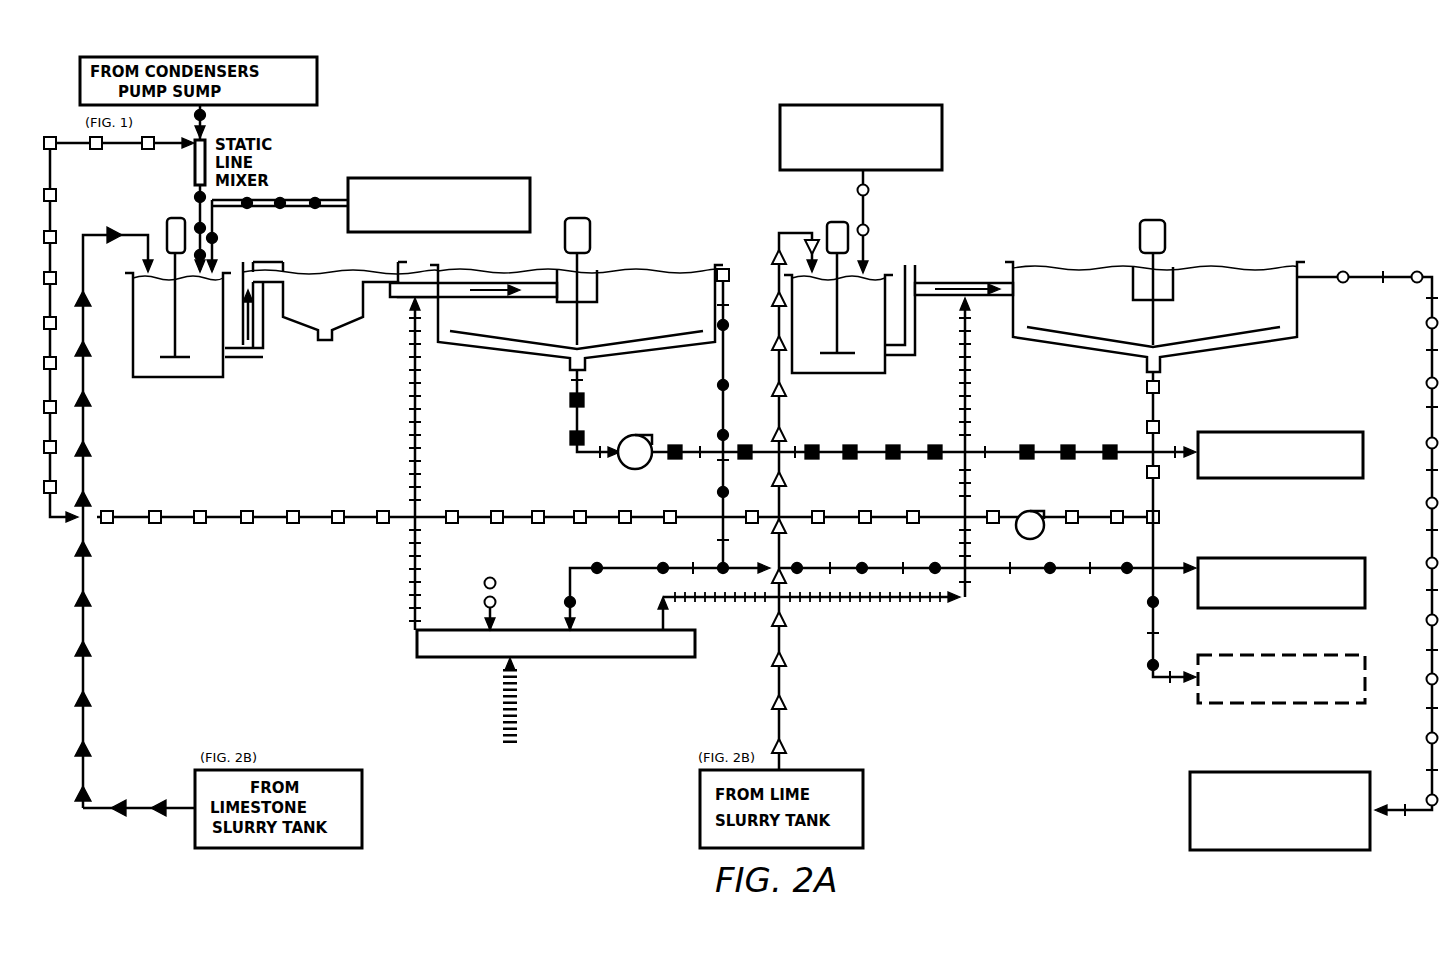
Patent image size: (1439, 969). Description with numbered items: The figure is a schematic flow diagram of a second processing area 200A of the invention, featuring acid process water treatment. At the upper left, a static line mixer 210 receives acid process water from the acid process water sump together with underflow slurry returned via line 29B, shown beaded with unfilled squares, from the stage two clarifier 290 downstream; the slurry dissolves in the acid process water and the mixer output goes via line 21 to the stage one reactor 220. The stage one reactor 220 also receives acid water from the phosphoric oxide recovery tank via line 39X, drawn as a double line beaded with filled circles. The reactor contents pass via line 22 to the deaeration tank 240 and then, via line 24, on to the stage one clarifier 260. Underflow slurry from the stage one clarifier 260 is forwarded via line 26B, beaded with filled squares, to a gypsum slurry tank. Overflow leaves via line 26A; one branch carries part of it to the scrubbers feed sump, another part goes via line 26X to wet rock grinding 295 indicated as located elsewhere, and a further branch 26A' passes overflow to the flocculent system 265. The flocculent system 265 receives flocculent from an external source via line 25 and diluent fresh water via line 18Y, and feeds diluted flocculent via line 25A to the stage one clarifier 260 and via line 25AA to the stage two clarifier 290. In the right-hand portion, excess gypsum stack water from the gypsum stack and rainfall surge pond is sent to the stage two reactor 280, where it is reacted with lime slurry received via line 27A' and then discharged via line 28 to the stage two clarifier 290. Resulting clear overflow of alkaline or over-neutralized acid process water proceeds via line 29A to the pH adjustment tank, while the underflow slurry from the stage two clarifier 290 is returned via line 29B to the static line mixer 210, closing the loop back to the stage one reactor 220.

The static line mixer 210 is at (195, 160).
The mixer output line 21 is at (196, 196).
The acid water line from P2O5 recovery tank 39X is at (222, 230).
The underflow slurry return line 29B is at (145, 148).
The lime slurry line 27A' is at (447, 506).
The stage 1 reactor 220 is at (133, 375).
The reactor discharge line 22 is at (265, 338).
The deaeration tank 240 is at (345, 330).
The clarifier feed line 24 is at (487, 283).
The stage 1 clarifier 260 is at (505, 345).
The first clarifier overflow line 26A is at (683, 418).
The underflow slurry line 26B is at (665, 448).
The second processing area 200A is at (668, 208).
The stage 2 reactor 280 is at (886, 378).
The stage 2 reactor discharge line 28 is at (948, 290).
The stage 2 clarifier 290 is at (1085, 345).
The clear overflow line 29A is at (1360, 274).
The diluted flocculent line to stage 1 clarifier 25A is at (413, 556).
The fresh water line 18Y is at (497, 590).
The flocculent system 265 is at (457, 630).
The flocculent line 25 is at (522, 690).
The overflow branch to flocculent system 26A' is at (668, 583).
The diluted flocculent line to stage 2 clarifier 25AA is at (808, 600).
The overflow line to wet rock grinding 26X is at (1150, 668).
The wet rock grinding 295 is at (1196, 692).